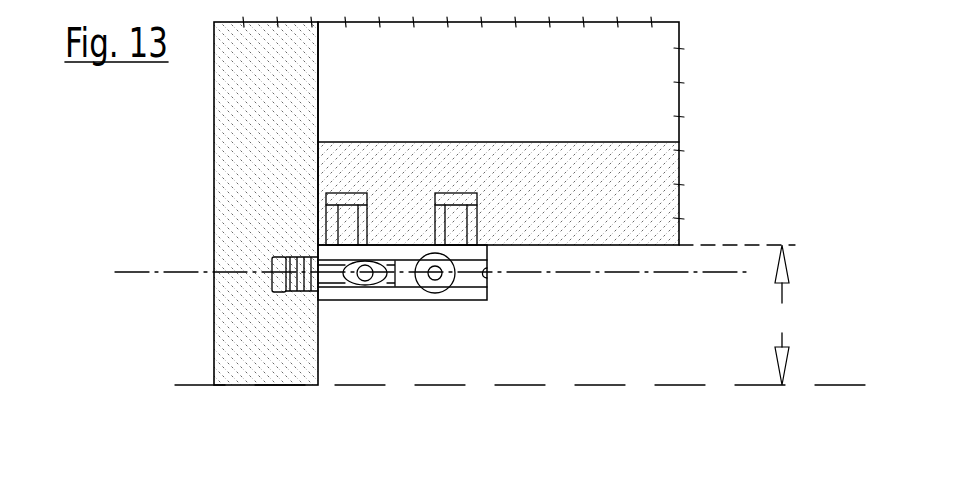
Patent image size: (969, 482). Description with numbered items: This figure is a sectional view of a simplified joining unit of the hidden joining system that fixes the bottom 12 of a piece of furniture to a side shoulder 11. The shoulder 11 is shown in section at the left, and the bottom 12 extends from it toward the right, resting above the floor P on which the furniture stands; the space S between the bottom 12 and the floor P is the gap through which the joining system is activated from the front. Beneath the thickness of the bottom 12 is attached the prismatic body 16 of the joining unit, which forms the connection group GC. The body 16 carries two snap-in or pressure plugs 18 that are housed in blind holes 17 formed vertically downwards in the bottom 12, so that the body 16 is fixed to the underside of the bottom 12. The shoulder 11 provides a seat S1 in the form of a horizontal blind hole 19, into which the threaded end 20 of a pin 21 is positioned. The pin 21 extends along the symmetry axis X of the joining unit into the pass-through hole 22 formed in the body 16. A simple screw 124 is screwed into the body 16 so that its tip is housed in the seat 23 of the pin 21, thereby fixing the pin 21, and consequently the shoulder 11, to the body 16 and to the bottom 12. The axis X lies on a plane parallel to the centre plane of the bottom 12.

The side shoulder 11 is at (222, 218).
The bottom 12 is at (680, 160).
The body 16 is at (388, 302).
The blind holes 17 is at (345, 200).
The snap-in or pressure plugs 18 is at (363, 203).
The horizontal blind hole 19 is at (270, 263).
The threaded end 20 is at (295, 291).
The pin 21 is at (327, 302).
The hole 22 is at (487, 274).
The seat 23 is at (353, 288).
The screw 124 is at (445, 293).
The seat S1 is at (272, 257).
The connection group GC is at (263, 297).
The symmetry axis X is at (732, 272).
The floor P is at (835, 385).
The space S is at (737, 315).